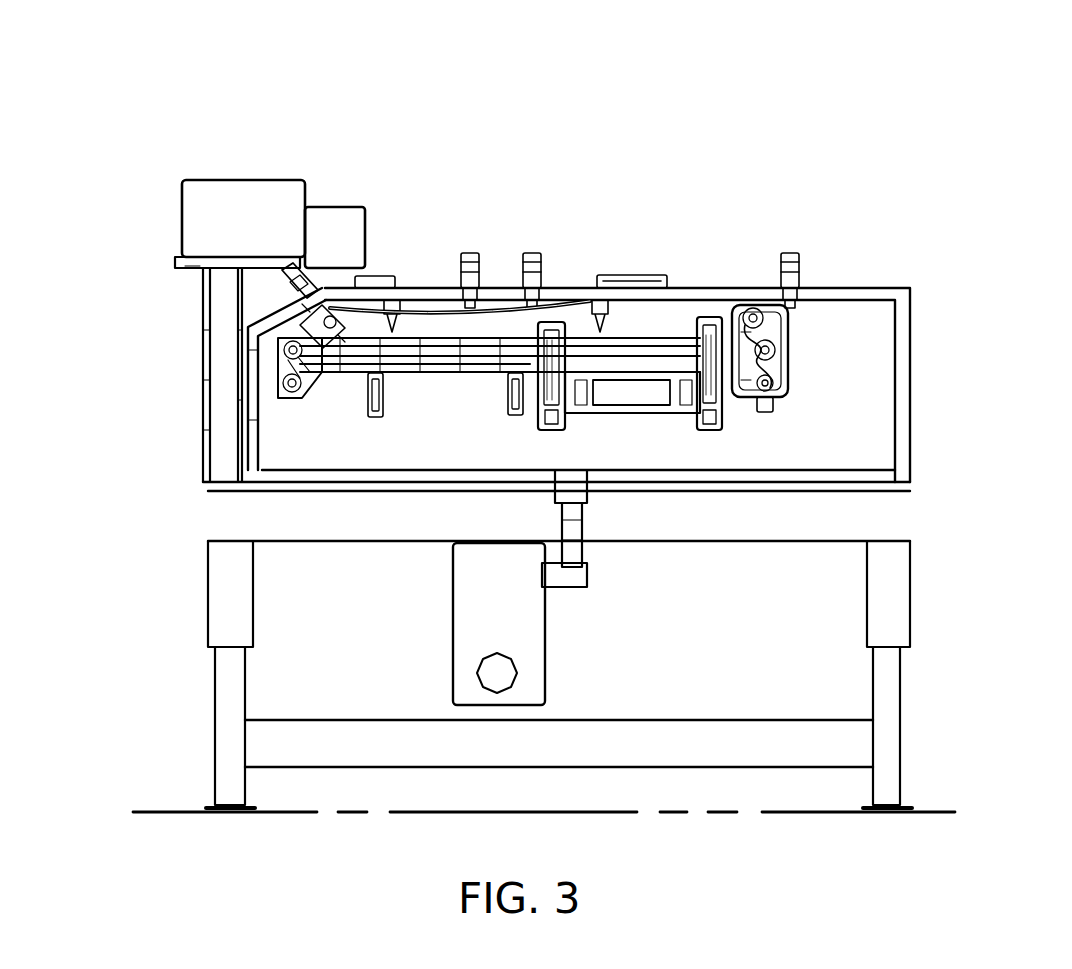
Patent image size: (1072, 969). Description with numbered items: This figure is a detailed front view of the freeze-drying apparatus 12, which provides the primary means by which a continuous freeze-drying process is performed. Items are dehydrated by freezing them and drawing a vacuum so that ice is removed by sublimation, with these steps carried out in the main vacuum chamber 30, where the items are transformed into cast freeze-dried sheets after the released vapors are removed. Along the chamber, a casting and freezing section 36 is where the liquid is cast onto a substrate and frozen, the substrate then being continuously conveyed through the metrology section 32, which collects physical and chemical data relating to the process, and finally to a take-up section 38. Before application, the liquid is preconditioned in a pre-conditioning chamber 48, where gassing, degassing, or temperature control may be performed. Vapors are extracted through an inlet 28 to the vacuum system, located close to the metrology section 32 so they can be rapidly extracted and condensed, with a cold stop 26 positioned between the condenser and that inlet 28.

The freeze-drying apparatus 12 is at (803, 127).
The cold stop 26 is at (453, 615).
The inlet 28 is at (557, 512).
The main vacuum chamber 30 is at (456, 427).
The metrology section 32 is at (683, 312).
The casting and freezing section 36 is at (423, 327).
The take-up section 38 is at (813, 377).
The pre-conditioning chamber 48 is at (215, 216).